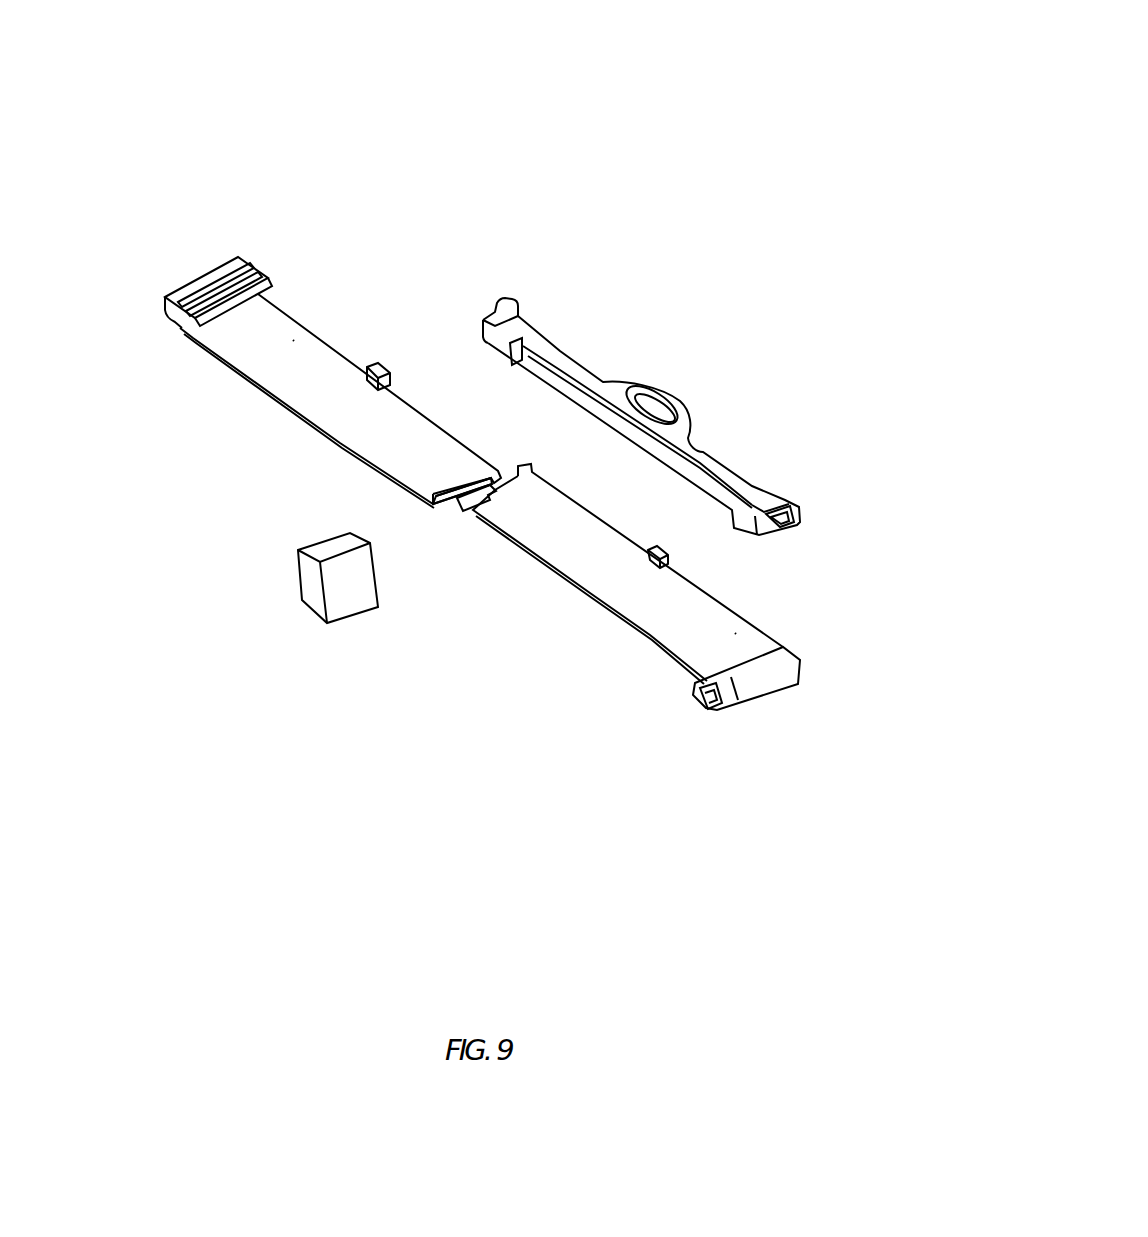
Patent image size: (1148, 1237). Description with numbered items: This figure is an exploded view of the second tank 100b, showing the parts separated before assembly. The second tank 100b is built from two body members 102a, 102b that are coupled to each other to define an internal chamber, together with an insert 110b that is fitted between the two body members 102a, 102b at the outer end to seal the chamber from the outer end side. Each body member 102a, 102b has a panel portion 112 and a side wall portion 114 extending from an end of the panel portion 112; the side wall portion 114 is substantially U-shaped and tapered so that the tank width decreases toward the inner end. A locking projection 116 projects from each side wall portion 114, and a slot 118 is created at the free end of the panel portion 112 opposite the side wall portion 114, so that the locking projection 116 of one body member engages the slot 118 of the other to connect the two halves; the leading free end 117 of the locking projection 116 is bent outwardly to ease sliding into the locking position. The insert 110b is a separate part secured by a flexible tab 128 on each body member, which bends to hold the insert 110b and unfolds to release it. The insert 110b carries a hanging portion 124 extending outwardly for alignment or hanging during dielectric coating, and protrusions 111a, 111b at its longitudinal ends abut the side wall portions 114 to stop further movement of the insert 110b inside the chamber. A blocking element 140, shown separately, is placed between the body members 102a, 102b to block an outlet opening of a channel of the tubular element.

The second tank 100b is at (496, 144).
The body member 102a is at (585, 590).
The body member 102b is at (280, 403).
The insert 110b is at (727, 449).
The protrusion 111a is at (518, 304).
The protrusion 111b is at (790, 505).
The panel portion 112 is at (293, 340).
The side wall portion 114 is at (230, 262).
The locking projection 116 is at (244, 277).
The leading free end 117 is at (260, 283).
The slot 118 is at (490, 493).
The hanging portion 124 is at (679, 399).
The flexible tab 128 is at (368, 366).
The blocking element 140 is at (317, 593).